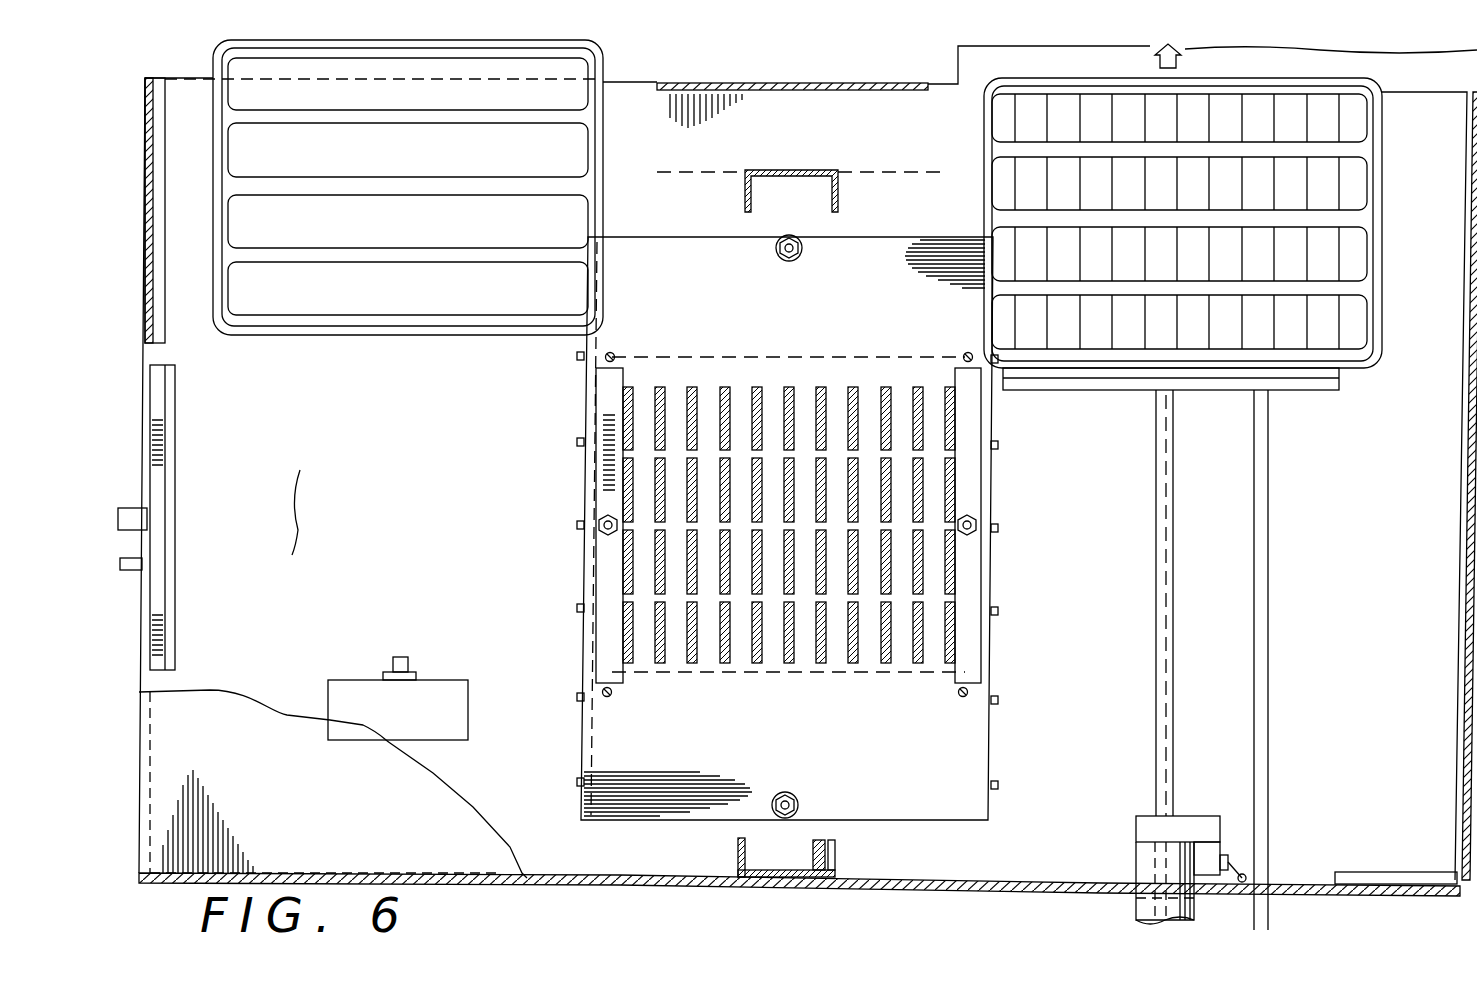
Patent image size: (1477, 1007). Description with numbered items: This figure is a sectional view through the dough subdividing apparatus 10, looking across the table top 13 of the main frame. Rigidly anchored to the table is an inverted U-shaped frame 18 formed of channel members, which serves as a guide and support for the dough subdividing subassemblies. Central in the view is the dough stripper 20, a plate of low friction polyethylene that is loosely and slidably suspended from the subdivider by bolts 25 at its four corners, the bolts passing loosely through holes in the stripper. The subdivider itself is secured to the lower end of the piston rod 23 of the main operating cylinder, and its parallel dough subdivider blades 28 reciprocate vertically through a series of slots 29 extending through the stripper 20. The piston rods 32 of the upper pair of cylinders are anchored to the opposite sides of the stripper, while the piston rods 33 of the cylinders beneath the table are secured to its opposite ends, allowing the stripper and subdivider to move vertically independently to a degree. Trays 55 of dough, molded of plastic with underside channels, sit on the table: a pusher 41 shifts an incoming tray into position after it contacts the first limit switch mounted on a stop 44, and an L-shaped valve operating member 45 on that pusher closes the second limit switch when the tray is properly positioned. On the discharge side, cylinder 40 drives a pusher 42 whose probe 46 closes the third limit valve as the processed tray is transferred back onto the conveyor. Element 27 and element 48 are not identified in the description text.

The dough subdividing apparatus 10 is at (693, 896).
The table top 13 is at (402, 516).
The inverted U-shaped frame 18 is at (808, 170).
The dough stripper 20 is at (574, 411).
The piston rod 23 is at (600, 532).
The bolts 25 is at (613, 353).
The tube 27 is at (592, 103).
The dough subdivider blades 28 is at (884, 387).
The slots 29 is at (789, 386).
The piston rods 32 is at (978, 524).
The piston rods 33 is at (802, 248).
The cylinder 40 is at (1137, 858).
The pusher 41 is at (175, 437).
The pusher 42 is at (1308, 392).
The stop 44 is at (470, 712).
The L-shaped valve operating member 45 is at (170, 565).
The probe 46 is at (1268, 577).
The insulation lining 48 is at (805, 84).
The tray 55 is at (315, 333).